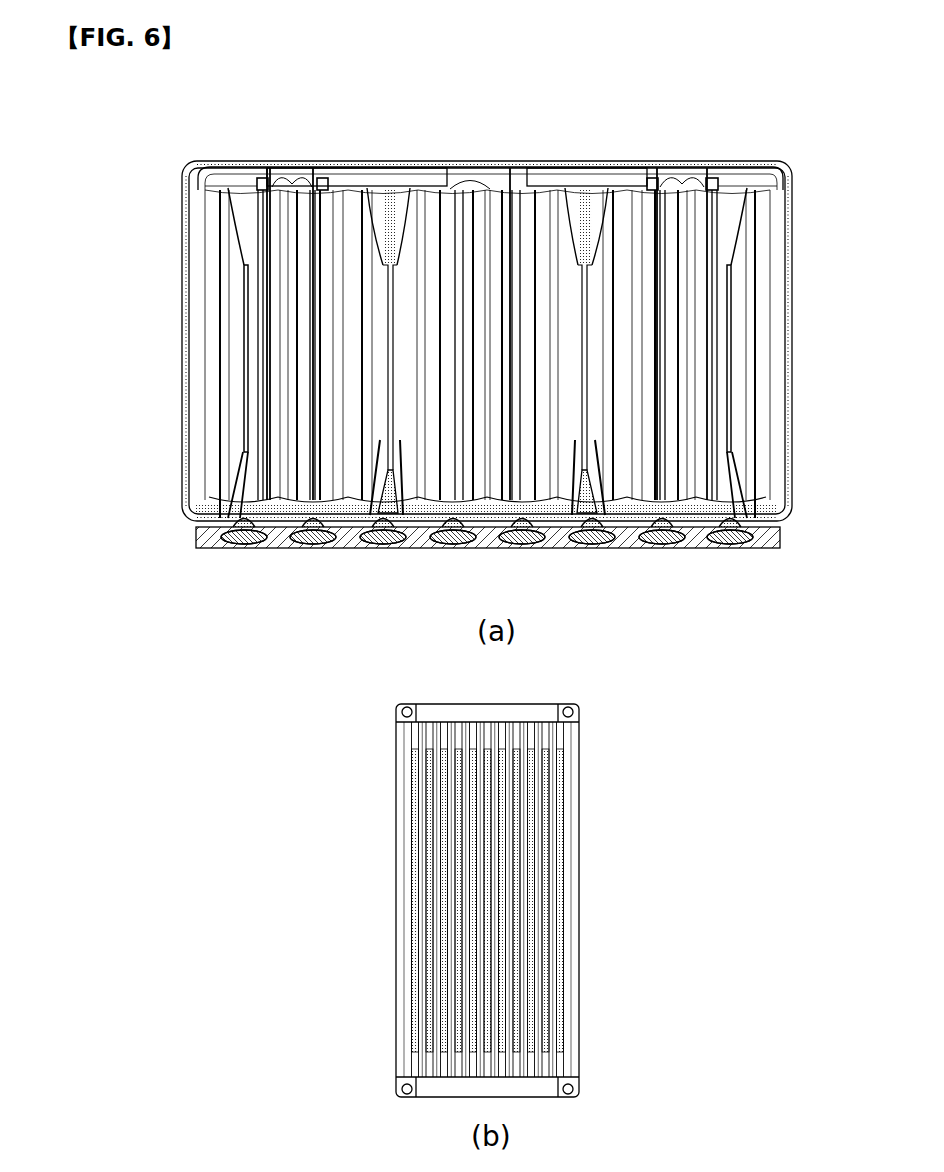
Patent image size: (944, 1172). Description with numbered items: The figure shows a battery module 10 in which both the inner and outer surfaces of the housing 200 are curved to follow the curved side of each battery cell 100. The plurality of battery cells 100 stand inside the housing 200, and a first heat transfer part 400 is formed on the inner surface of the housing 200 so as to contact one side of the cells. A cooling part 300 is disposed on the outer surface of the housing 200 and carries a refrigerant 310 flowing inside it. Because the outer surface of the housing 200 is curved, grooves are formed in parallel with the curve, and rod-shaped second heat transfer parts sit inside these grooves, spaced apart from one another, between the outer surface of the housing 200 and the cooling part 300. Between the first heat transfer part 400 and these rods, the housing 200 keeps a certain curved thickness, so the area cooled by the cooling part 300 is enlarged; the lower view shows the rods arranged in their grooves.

The battery module 10 is at (169, 108).
The battery cell 100 is at (229, 272).
The housing 200 is at (787, 163).
The cooling part 300 is at (448, 571).
The refrigerant 310 is at (244, 540).
The first heat transfer part 400 is at (200, 510).